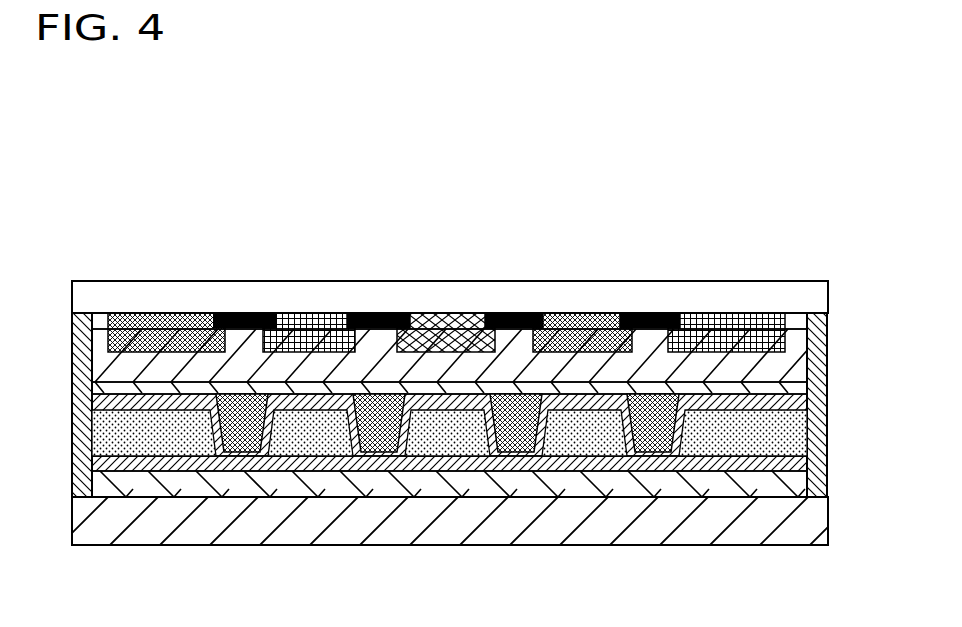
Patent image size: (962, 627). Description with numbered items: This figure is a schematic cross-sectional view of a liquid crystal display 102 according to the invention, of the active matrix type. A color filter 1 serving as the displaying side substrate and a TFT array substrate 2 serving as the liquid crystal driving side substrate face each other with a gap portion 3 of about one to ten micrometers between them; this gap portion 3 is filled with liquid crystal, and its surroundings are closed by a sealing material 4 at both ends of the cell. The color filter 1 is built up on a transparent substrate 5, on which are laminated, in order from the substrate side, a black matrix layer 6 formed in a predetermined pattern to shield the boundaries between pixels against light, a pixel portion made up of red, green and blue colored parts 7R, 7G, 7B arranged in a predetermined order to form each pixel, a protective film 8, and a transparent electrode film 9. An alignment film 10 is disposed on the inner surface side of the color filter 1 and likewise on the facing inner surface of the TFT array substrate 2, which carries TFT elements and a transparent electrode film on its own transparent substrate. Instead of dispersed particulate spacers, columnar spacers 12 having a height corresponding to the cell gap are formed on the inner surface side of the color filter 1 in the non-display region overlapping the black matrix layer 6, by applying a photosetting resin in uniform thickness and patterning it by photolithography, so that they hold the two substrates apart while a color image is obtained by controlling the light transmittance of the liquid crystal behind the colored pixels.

The liquid crystal display 102 is at (176, 278).
The color filter 1 is at (58, 390).
The TFT array substrate 2 is at (137, 488).
The gap portion 3 is at (298, 438).
The sealing material 4 is at (453, 495).
The transparent substrate 5 is at (828, 296).
The black matrix layer 6 is at (657, 313).
The red pixel portion 7R is at (305, 313).
The green pixel portion 7G is at (442, 313).
The blue pixel portion 7B is at (587, 313).
The protective film 8 is at (790, 358).
The transparent electrode film 9 is at (800, 387).
The alignment film 10 is at (805, 405).
The columnar spacers 12 is at (631, 396).